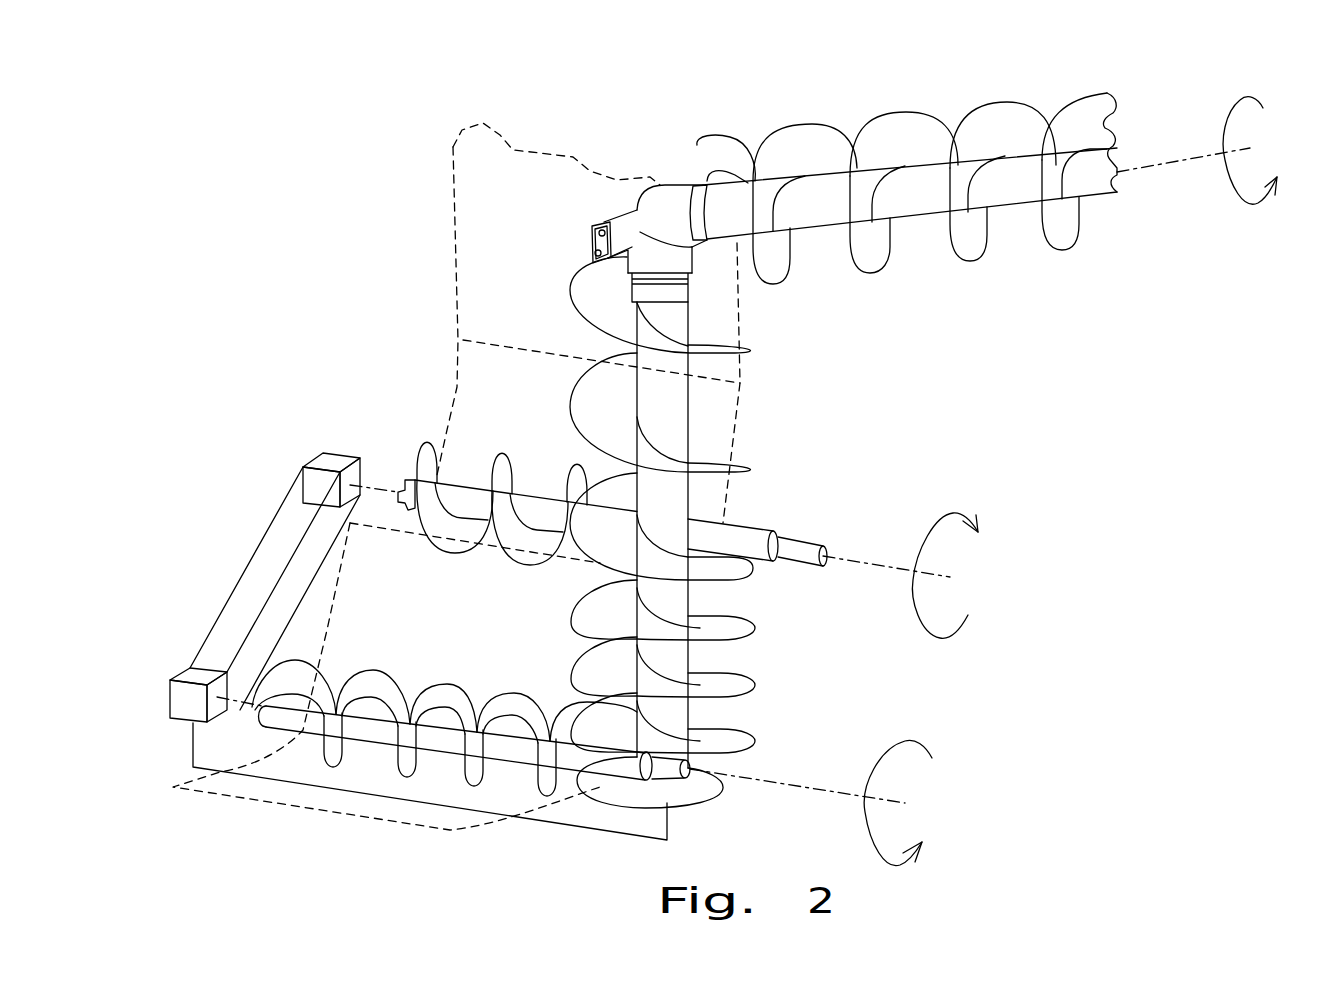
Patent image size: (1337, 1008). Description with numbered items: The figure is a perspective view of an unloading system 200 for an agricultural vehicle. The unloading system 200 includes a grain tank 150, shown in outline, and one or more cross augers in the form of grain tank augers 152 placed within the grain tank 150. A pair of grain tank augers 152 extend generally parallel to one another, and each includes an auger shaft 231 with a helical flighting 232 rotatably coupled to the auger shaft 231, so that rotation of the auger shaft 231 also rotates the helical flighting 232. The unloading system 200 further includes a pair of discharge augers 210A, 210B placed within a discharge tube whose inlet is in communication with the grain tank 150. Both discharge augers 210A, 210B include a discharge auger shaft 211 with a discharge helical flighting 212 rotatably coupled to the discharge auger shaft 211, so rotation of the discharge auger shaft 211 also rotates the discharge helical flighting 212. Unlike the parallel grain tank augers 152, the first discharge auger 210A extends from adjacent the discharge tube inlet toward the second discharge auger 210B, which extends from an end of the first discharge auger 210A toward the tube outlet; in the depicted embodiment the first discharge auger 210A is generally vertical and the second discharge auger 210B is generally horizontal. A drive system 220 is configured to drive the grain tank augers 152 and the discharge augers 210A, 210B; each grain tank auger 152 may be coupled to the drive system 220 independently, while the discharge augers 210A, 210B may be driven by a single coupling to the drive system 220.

The grain tank 150 is at (521, 142).
The grain tank augers 152 is at (539, 586).
The unloading system 200 is at (774, 84).
The first discharge auger 210A is at (740, 659).
The second discharge auger 210B is at (907, 159).
The discharge auger shaft 211 is at (903, 207).
The discharge helical flighting 212 is at (898, 132).
The drive system 220 is at (238, 525).
The auger shaft 231 is at (460, 490).
The helical flighting 232 is at (458, 553).